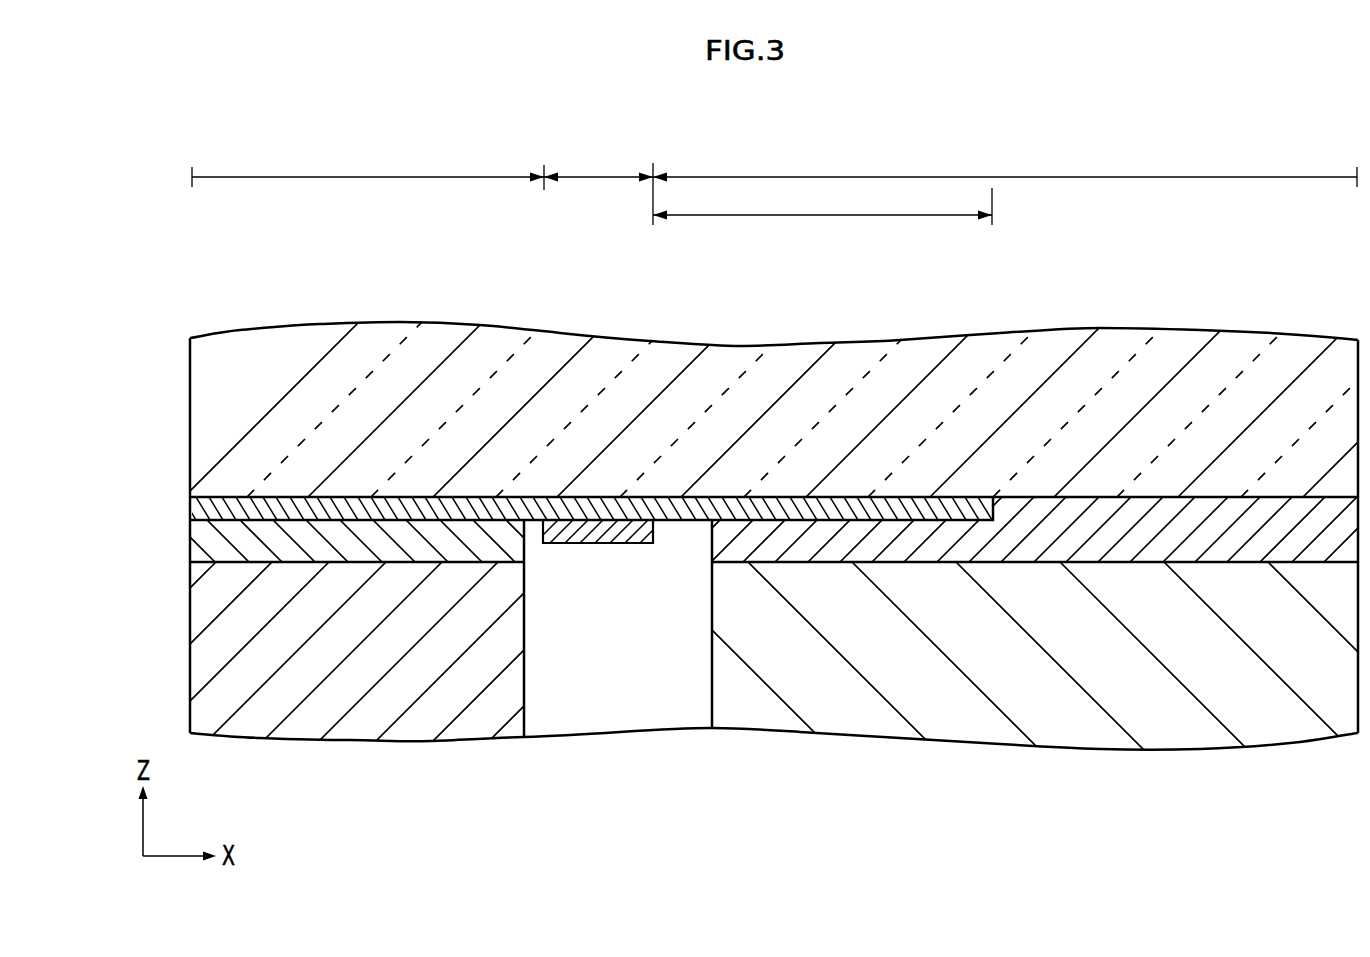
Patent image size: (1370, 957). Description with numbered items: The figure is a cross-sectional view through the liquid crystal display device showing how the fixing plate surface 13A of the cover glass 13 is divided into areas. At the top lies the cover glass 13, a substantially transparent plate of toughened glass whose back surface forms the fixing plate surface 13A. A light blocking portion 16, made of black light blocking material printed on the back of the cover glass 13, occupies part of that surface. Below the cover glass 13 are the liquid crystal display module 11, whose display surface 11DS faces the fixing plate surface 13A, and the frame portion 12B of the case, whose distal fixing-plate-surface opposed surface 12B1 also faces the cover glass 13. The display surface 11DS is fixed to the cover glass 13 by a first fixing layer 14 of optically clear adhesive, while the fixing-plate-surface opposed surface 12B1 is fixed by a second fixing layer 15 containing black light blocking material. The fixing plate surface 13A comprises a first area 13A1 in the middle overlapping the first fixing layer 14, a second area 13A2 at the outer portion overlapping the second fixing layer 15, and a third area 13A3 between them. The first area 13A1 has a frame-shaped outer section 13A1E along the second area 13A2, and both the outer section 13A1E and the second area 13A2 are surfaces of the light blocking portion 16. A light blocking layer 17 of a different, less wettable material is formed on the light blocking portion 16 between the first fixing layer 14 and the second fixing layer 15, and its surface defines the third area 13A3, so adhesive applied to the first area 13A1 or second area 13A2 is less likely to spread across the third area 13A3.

The liquid crystal display module 11 is at (848, 700).
The display surface 11DS is at (1135, 563).
The frame portion 12B is at (365, 718).
The fixing-plate-surface opposed surface 12B1 is at (410, 560).
The cover glass 13 is at (978, 360).
The fixing plate surface 13A is at (832, 522).
The first area 13A1 is at (1005, 163).
The second area 13A2 is at (368, 165).
The third area 13A3 is at (598, 182).
The outer section 13A1E is at (822, 204).
The first fixing layer 14 is at (910, 550).
The second fixing layer 15 is at (332, 542).
The light blocking portion 16 is at (670, 500).
The light blocking layer 17 is at (600, 522).